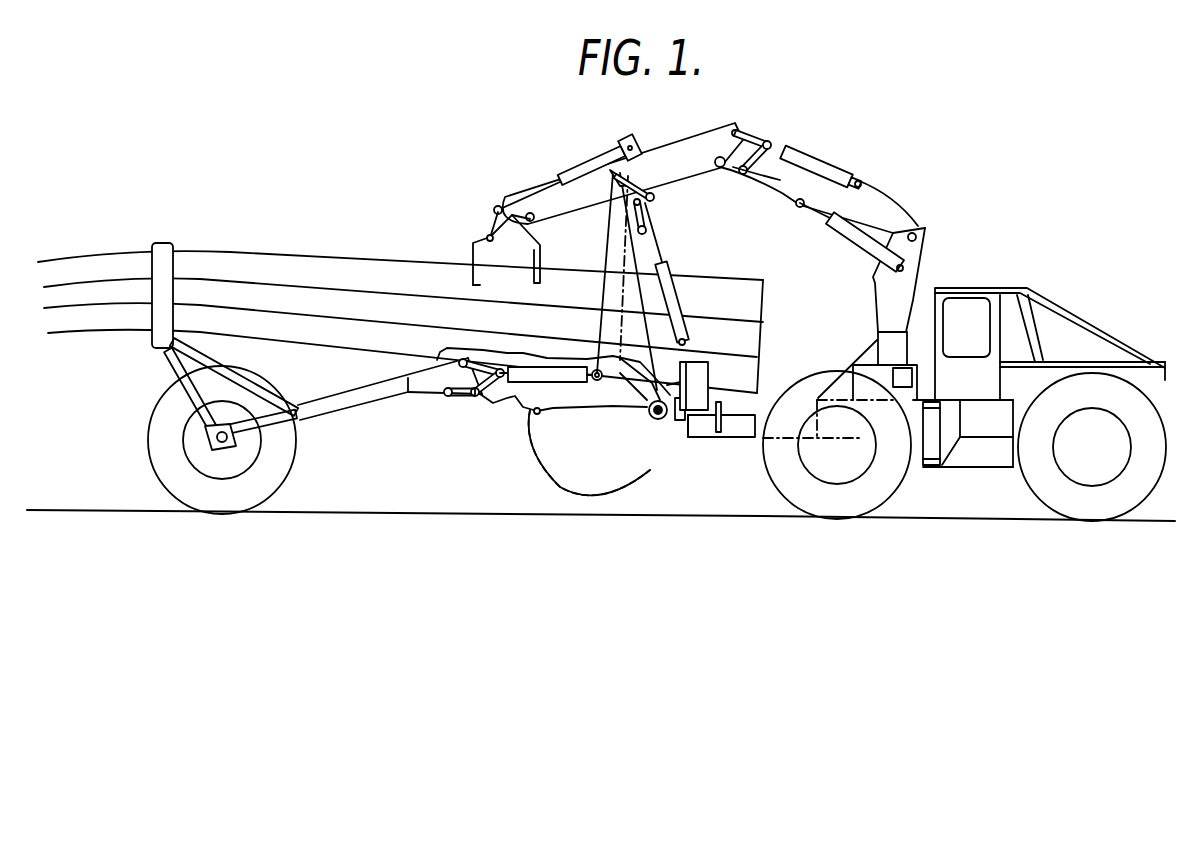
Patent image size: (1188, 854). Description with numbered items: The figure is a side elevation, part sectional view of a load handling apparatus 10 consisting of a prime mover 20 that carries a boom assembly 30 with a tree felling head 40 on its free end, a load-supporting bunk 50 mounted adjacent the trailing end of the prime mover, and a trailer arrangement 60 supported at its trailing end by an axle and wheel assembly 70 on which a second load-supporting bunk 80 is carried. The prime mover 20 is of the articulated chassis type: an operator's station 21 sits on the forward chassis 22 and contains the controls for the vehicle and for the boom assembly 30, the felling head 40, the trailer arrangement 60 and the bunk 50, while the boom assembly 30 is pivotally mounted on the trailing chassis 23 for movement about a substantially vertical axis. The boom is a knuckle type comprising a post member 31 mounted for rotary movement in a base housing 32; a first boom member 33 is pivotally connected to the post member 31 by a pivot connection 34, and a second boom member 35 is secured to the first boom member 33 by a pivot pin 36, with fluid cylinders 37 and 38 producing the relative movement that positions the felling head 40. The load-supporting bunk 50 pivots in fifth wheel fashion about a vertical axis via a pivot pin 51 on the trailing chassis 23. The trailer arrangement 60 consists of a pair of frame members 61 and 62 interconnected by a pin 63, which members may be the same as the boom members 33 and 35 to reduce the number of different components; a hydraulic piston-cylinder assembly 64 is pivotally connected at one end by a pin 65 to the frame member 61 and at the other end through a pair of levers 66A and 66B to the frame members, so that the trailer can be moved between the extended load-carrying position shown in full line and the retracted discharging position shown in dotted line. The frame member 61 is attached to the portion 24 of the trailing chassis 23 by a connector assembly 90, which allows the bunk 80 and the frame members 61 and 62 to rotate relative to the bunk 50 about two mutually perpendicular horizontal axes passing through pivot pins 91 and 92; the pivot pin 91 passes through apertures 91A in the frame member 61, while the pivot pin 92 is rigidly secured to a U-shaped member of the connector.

The load handling apparatus 10 is at (727, 226).
The prime mover 20 is at (986, 450).
The operator's station 21 is at (972, 318).
The forward chassis 22 is at (998, 429).
The trailing chassis 23 is at (918, 440).
The portion of the vehicle chassis 24 is at (720, 432).
The boom assembly 30 is at (946, 179).
The post member 31 is at (903, 282).
The base housing 32 is at (877, 338).
The first boom member 33 is at (805, 190).
The pivot connection 34 is at (918, 226).
The second boom member 35 is at (682, 152).
The pivot pin 36 is at (718, 156).
The fluid cylinder 37 is at (840, 234).
The fluid cylinder 38 is at (807, 162).
The tree felling head 40 is at (482, 257).
The load-supporting bunk 50 is at (688, 400).
The pivot pin 51 is at (717, 410).
The trailer arrangement 60 is at (515, 396).
The frame member 61 is at (575, 398).
The frame member 62 is at (435, 375).
The pin 63 is at (447, 394).
The hydraulic piston-cylinder assembly 64 is at (550, 370).
The pin 65 is at (598, 362).
The lever 66A is at (488, 388).
The lever 66B is at (486, 362).
The axle and wheel assembly 70 is at (268, 440).
The load-supporting bunk 80 is at (168, 244).
The connector assembly 90 is at (676, 418).
The pivot pin 91 is at (655, 418).
The apertures 91A is at (653, 413).
The pivot pin 92 is at (698, 380).